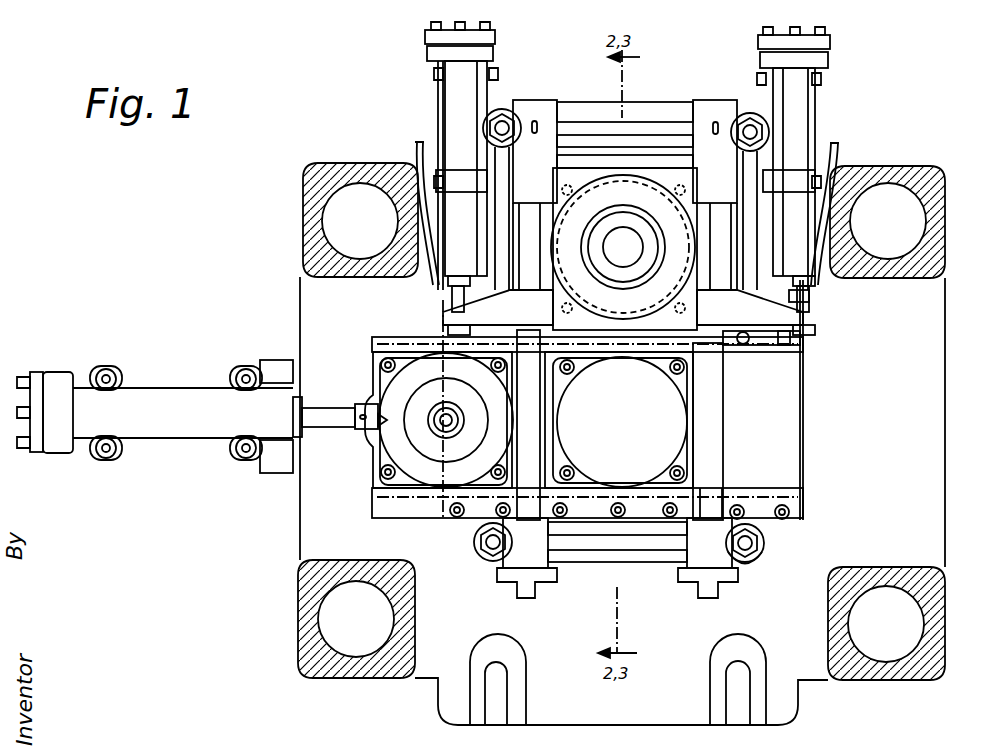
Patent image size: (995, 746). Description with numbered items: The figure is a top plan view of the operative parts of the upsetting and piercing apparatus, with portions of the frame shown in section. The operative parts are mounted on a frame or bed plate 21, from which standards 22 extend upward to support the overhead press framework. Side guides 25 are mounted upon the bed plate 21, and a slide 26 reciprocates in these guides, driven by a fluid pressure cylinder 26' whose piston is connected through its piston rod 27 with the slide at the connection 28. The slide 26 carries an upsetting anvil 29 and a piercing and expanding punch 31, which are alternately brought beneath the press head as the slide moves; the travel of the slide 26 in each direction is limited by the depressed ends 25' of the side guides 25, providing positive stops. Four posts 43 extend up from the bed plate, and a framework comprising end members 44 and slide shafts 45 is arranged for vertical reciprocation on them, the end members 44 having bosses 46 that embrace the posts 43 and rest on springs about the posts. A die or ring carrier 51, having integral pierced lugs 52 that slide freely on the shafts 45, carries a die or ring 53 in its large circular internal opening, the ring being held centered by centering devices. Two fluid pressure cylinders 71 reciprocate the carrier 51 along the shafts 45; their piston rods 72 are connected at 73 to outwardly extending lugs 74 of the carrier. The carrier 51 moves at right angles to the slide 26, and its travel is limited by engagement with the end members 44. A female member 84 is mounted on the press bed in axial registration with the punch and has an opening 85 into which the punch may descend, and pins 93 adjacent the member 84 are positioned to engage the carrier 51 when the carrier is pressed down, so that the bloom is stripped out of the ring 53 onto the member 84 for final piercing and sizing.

The frame or bed plate 21 is at (783, 688).
The standards 22 is at (313, 235).
The side guides 25 is at (575, 434).
The depressed ends 25' is at (770, 503).
The slide 26 is at (682, 400).
The fluid pressure cylinder 26' is at (159, 416).
The piston rod 27 is at (332, 417).
The connection point 28 is at (367, 424).
The upsetting anvil 29 is at (652, 435).
The piercing and expanding punch 31 is at (462, 468).
The posts 43 is at (503, 126).
The end members 44 is at (643, 120).
The slide shafts 45 is at (715, 239).
The bosses 46 is at (754, 562).
The die or ring carrier 51 is at (583, 173).
The pierced lugs or bosses 52 is at (715, 173).
The die or ring 53 is at (673, 268).
The fluid pressure cylinders 71 is at (452, 123).
The piston rods 72 is at (805, 302).
The connection point 73 is at (790, 339).
The outwardly extending lugs 74 is at (450, 314).
The female member 84 is at (628, 194).
The opening 85 is at (626, 246).
The pins 93 is at (568, 310).